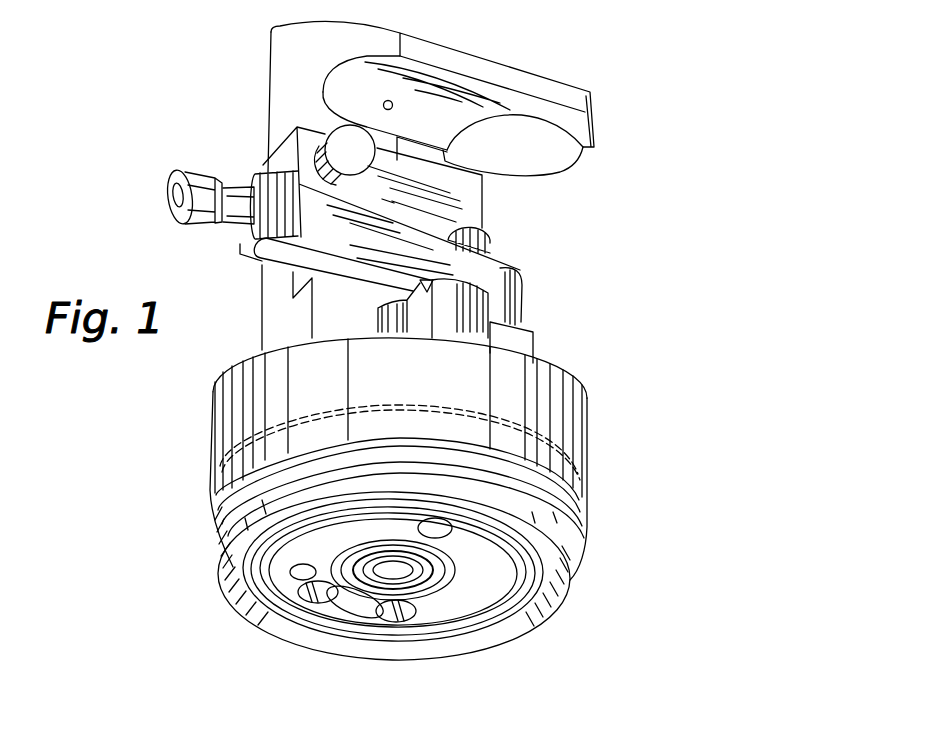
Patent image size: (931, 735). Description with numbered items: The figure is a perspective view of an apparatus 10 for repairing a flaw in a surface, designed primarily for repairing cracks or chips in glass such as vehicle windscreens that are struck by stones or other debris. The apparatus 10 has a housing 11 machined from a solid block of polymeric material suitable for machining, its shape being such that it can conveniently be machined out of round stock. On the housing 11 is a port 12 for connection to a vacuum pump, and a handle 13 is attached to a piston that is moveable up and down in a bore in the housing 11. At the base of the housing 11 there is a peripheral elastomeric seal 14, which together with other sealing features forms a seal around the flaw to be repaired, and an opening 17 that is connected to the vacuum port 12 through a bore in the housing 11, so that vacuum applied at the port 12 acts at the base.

The apparatus for repairing a flaw 10 is at (590, 328).
The housing 11 is at (562, 425).
The port 12 is at (198, 176).
The handle 13 is at (505, 77).
The peripheral elastomeric seal 14 is at (560, 594).
The opening 17 is at (300, 574).